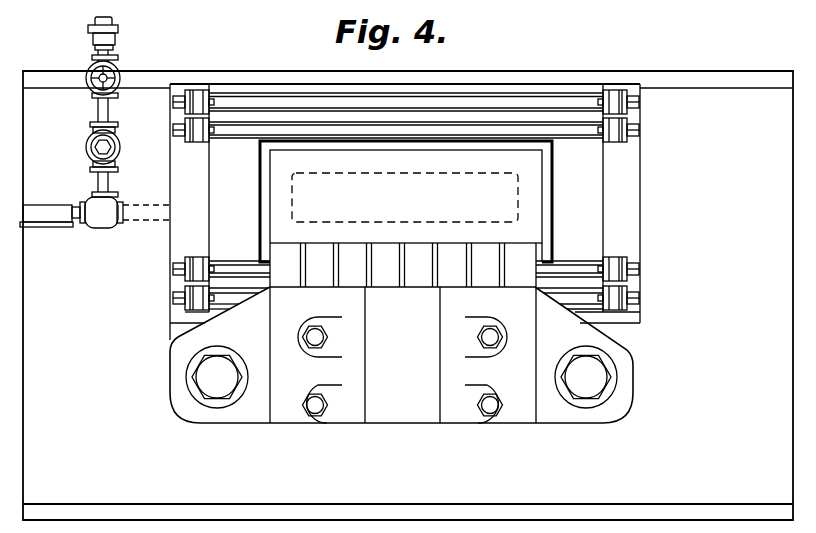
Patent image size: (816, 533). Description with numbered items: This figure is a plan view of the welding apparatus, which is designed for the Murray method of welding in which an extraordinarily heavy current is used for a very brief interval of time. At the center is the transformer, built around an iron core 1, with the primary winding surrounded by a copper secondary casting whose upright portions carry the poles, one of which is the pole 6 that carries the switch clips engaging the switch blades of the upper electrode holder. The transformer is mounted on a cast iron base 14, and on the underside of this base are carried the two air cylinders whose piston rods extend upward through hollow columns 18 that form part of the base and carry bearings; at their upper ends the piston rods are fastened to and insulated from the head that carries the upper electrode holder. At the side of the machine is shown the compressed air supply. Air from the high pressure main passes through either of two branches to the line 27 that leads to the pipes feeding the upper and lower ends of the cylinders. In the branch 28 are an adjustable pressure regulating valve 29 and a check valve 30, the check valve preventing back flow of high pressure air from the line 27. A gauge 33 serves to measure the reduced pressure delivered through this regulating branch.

The iron core 1 is at (405, 203).
The pole 6 is at (260, 250).
The cast iron base 14 is at (185, 233).
The hollow column 18 is at (173, 415).
The line 27 is at (133, 204).
The branch 28 is at (114, 48).
The adjustable pressure regulating valve 29 is at (93, 96).
The check valve 30 is at (90, 148).
The gauge 33 is at (48, 228).